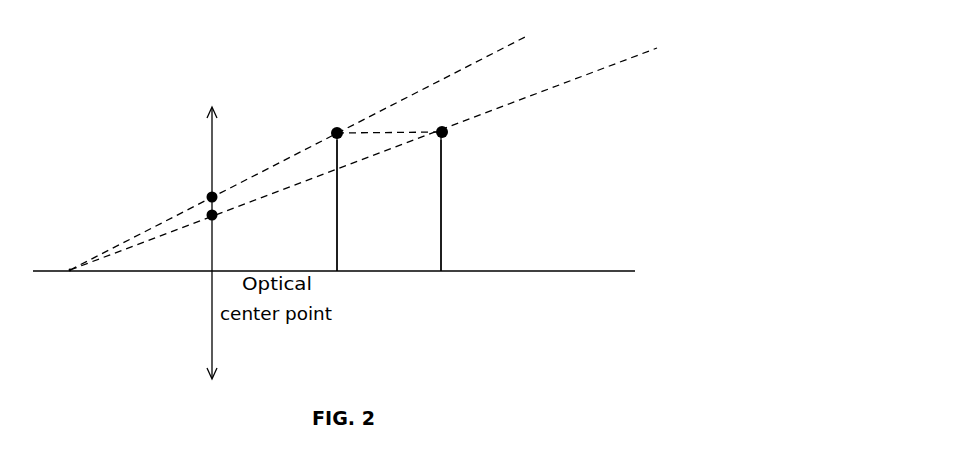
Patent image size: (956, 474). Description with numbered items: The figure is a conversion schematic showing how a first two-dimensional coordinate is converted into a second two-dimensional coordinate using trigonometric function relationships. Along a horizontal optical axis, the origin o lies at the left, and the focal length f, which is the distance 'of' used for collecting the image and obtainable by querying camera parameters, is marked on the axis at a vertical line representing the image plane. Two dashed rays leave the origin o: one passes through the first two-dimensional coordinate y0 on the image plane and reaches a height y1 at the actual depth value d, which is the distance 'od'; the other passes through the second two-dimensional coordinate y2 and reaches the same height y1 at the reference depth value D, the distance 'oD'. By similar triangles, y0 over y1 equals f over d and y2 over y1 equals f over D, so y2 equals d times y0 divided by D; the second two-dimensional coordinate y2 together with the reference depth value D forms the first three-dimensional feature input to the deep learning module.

The origin point o is at (65, 280).
The focal length f is at (209, 243).
The first 2D coordinate y0 is at (198, 199).
The second 2D coordinate y2 is at (222, 226).
The object height y1 is at (406, 205).
The actual depth value d is at (336, 210).
The reference depth value D is at (438, 210).